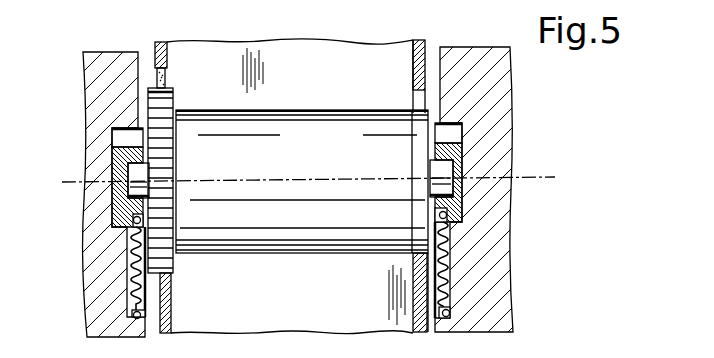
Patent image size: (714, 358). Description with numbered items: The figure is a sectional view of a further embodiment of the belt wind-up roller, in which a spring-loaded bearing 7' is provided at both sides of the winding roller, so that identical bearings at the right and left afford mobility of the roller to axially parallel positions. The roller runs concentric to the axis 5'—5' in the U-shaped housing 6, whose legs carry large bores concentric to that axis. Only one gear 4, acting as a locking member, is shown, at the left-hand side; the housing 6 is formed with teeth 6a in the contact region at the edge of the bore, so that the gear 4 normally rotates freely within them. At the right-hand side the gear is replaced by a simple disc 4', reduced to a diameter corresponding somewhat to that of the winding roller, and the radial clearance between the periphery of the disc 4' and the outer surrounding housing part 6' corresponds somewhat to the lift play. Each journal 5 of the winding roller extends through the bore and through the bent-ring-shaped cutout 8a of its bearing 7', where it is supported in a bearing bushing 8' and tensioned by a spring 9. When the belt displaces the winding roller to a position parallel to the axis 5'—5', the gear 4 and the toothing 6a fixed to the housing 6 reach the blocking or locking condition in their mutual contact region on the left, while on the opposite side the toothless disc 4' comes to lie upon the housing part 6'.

The gear 4 is at (180, 173).
The disc 4' is at (302, 221).
The journal 5 is at (250, 191).
The axis 5' is at (299, 179).
The housing 6 is at (280, 168).
The housing part 6' is at (417, 69).
The teeth 6a is at (160, 78).
The bearing 7' is at (357, 192).
The bearing bushing 8' is at (292, 175).
The cutout 8a is at (117, 135).
The spring 9 is at (152, 290).